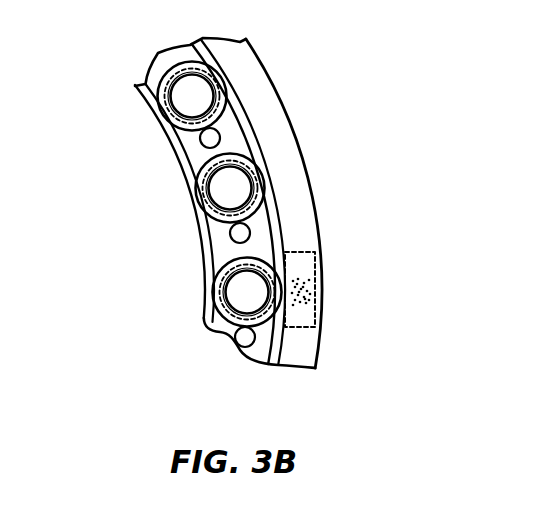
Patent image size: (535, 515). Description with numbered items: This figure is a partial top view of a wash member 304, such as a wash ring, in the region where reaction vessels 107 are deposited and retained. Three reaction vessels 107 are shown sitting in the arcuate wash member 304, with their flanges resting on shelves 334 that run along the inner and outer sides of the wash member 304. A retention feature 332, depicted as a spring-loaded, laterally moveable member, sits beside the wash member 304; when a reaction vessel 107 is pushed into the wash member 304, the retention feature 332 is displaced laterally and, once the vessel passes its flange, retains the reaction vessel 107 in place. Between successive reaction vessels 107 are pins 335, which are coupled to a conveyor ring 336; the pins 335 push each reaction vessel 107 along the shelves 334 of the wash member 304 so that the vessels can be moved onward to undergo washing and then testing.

The wash member 304 is at (283, 69).
The reaction vessel 107 is at (192, 97).
The pin 335 is at (210, 138).
The shelf 334 is at (208, 259).
The conveyor ring 336 is at (228, 131).
The retention feature 332 is at (285, 252).